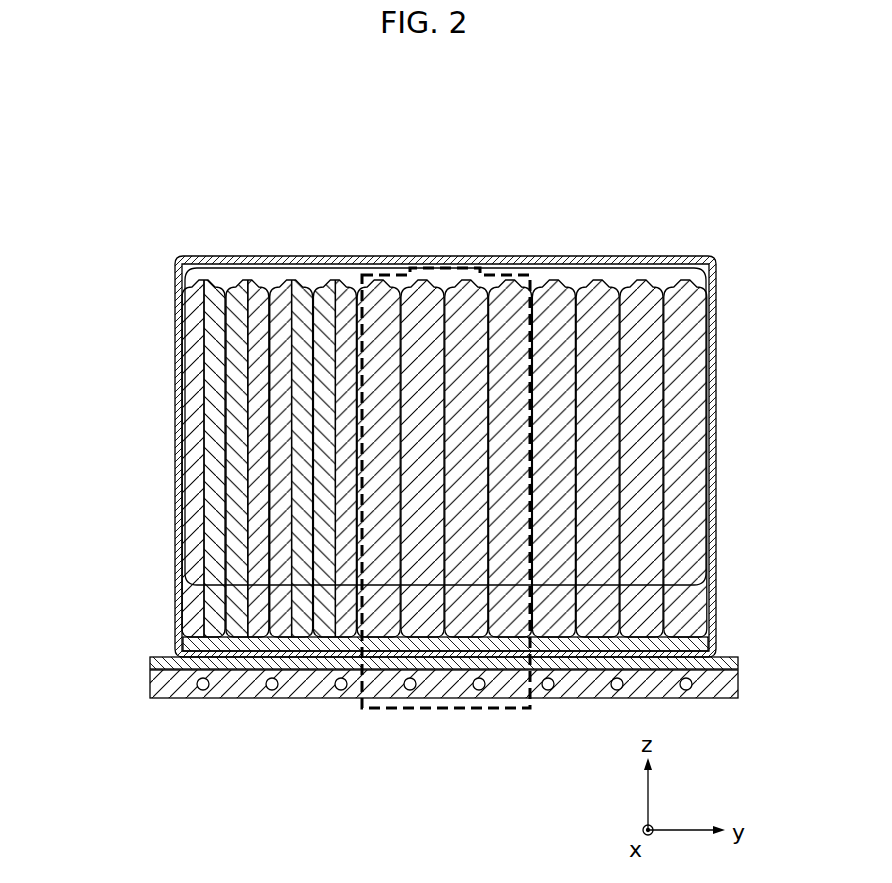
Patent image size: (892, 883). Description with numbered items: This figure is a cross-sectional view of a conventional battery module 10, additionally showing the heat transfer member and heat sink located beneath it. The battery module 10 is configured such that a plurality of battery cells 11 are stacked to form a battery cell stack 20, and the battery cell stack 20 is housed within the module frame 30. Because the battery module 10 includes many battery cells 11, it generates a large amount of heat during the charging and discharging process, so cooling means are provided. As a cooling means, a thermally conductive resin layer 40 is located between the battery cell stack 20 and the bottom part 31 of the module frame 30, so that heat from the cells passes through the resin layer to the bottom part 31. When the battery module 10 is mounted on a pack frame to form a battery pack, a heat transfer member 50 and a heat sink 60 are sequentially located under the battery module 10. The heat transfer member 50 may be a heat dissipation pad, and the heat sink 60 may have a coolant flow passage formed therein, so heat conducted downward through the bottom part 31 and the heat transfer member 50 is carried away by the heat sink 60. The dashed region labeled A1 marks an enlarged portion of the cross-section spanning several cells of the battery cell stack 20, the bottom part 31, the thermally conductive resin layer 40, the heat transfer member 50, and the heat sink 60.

The battery module 10 is at (454, 195).
The battery cell 11 is at (690, 481).
The battery cell stack 20 is at (475, 588).
The module frame 30 is at (168, 303).
The bottom part 31 is at (213, 650).
The thermally conductive resin layer 40 is at (243, 646).
The heat transfer member 50 is at (313, 665).
The heat sink 60 is at (383, 683).
The region A1 is at (413, 712).